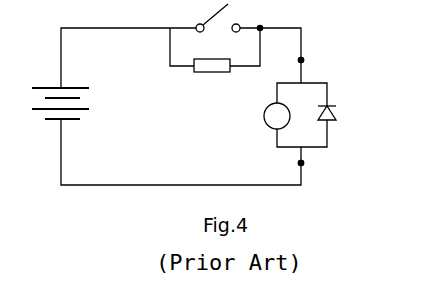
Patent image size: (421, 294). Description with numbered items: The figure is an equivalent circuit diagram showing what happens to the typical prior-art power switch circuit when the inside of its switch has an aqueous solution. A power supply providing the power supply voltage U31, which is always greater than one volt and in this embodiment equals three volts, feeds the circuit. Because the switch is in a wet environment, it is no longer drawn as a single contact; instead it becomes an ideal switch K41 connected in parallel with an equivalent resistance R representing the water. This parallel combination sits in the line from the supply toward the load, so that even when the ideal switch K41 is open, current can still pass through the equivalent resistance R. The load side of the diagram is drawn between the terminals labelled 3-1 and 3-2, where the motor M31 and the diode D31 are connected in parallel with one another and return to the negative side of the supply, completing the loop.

The power supply voltage U31 is at (74, 101).
The ideal switch K41 is at (218, 33).
The equivalent resistance R is at (215, 61).
The motor M31 is at (263, 124).
The diode D31 is at (335, 115).
The terminal 3-1 is at (313, 60).
The terminal 3-2 is at (313, 163).